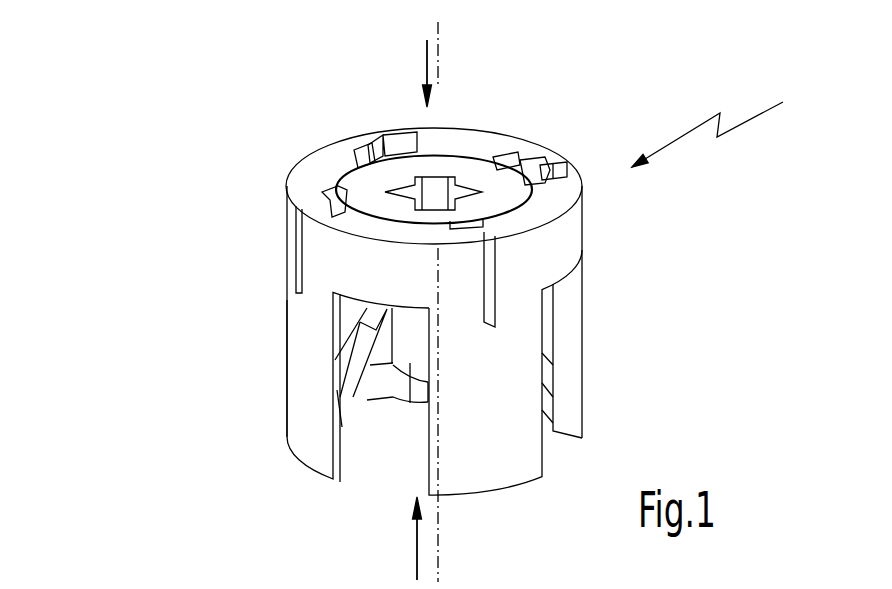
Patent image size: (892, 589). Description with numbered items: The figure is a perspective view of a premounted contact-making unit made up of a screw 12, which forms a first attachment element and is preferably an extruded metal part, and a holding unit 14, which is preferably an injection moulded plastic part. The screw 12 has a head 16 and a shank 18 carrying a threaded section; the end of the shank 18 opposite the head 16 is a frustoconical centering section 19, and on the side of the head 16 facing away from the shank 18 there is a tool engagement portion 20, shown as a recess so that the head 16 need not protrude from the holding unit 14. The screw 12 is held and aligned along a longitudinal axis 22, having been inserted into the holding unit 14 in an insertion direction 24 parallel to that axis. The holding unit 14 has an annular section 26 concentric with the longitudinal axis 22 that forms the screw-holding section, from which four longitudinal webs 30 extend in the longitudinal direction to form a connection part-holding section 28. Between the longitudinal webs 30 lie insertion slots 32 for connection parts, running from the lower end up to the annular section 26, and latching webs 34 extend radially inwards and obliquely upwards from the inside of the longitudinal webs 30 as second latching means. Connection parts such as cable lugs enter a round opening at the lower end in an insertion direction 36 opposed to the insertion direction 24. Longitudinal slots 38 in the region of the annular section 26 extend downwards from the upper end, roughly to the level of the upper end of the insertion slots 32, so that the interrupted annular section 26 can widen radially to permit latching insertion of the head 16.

The screw 12 is at (480, 168).
The holding unit 14 is at (583, 233).
The head 16 is at (355, 153).
The shank 18 is at (417, 400).
The centering section 19 is at (417, 395).
The tool engagement portion 20 is at (435, 190).
The longitudinal axis 22 is at (437, 27).
The insertion direction 24 is at (427, 52).
The annular section 26 is at (280, 210).
The connection part-holding section 28 is at (280, 376).
The longitudinal webs 30 is at (303, 337).
The insertion slots 32 is at (338, 452).
The latching webs 34 is at (342, 377).
The insertion direction 36 is at (417, 547).
The longitudinal slots 38 is at (560, 153).